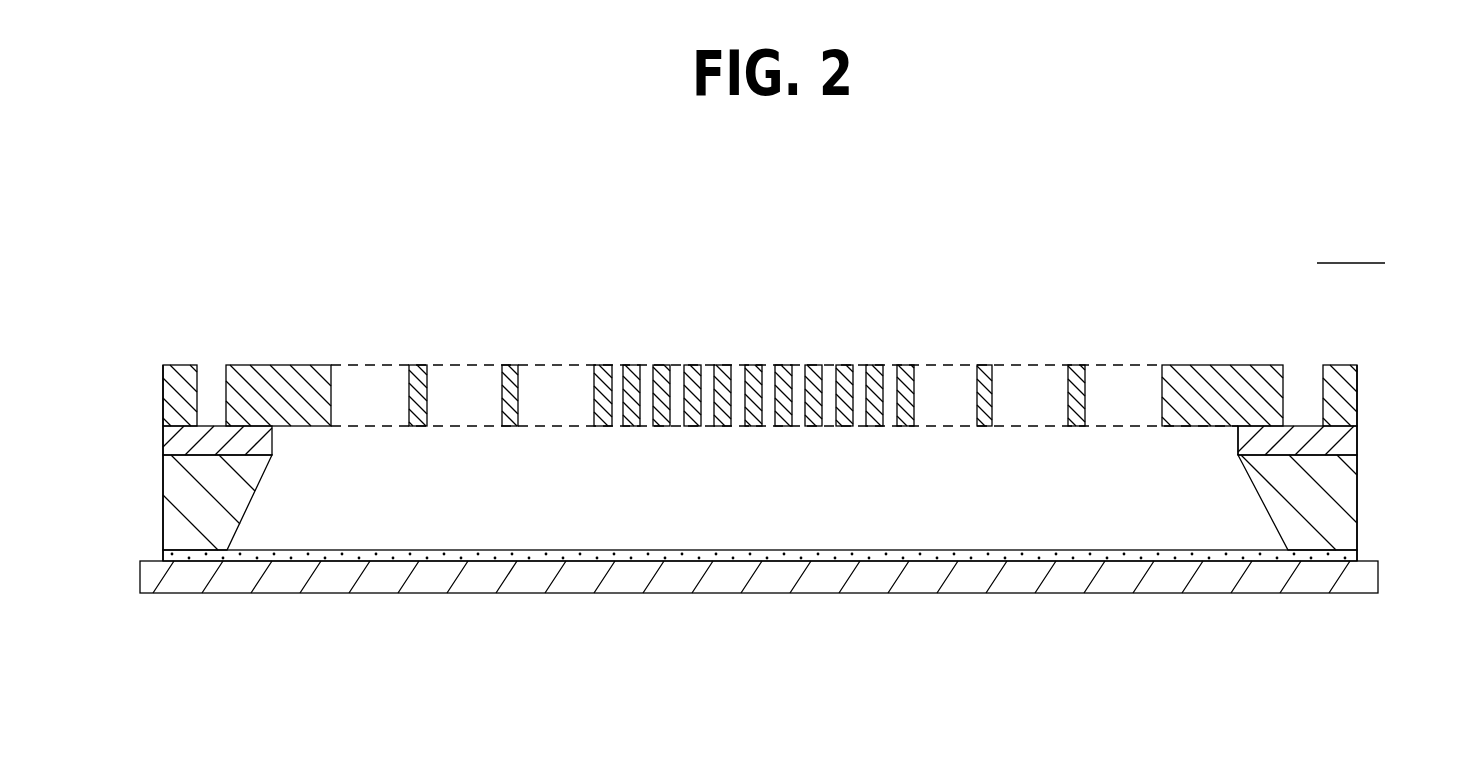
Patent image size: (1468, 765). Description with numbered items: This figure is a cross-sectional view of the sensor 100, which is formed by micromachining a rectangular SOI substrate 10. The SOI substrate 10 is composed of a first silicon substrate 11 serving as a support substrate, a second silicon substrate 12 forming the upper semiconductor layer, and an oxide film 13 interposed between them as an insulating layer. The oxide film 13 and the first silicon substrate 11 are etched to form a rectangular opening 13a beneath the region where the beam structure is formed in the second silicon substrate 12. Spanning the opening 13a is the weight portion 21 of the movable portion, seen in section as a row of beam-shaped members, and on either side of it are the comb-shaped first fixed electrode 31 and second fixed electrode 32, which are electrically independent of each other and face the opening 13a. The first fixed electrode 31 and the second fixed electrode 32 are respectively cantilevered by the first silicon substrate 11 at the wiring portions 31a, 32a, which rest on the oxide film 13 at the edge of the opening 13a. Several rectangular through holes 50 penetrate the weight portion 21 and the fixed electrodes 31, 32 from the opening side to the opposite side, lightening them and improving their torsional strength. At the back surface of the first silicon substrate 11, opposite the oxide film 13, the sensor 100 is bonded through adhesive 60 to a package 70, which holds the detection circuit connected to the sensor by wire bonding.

The sensor 100 is at (1313, 305).
The SOI substrate 10 is at (1371, 530).
The first silicon substrate 11 is at (1353, 484).
The second silicon substrate 12 is at (1353, 391).
The oxide film 13 is at (1350, 436).
The opening 13a is at (1238, 441).
The weight portion 21 is at (897, 347).
The first fixed electrode 31 is at (608, 347).
The wiring portion 31a is at (332, 347).
The second fixed electrode 32 is at (1157, 347).
The wiring portion 32a is at (1285, 347).
The through holes 50 is at (1010, 632).
The adhesive 60 is at (248, 551).
The package 70 is at (347, 572).